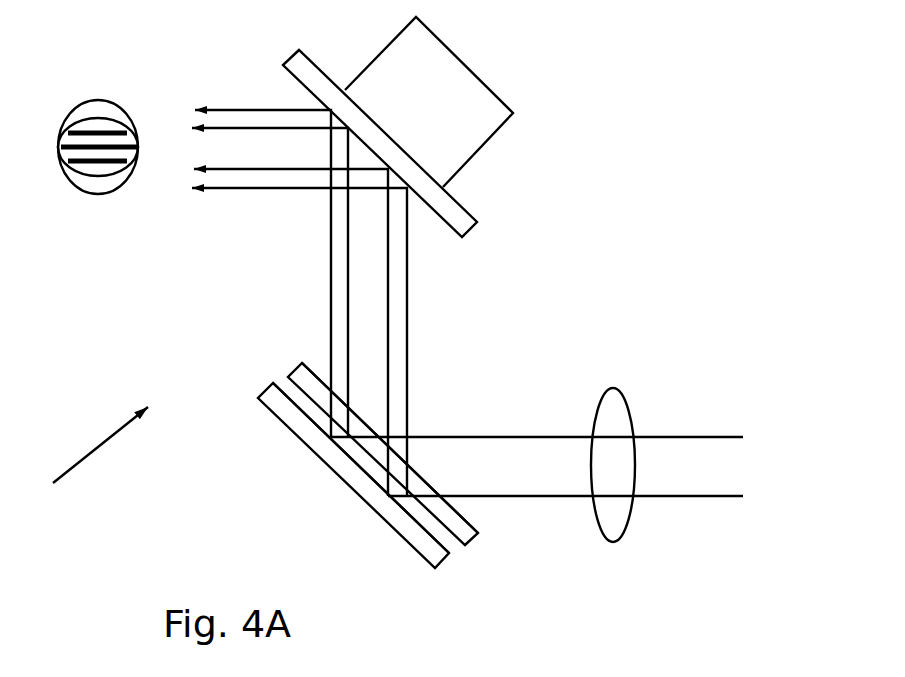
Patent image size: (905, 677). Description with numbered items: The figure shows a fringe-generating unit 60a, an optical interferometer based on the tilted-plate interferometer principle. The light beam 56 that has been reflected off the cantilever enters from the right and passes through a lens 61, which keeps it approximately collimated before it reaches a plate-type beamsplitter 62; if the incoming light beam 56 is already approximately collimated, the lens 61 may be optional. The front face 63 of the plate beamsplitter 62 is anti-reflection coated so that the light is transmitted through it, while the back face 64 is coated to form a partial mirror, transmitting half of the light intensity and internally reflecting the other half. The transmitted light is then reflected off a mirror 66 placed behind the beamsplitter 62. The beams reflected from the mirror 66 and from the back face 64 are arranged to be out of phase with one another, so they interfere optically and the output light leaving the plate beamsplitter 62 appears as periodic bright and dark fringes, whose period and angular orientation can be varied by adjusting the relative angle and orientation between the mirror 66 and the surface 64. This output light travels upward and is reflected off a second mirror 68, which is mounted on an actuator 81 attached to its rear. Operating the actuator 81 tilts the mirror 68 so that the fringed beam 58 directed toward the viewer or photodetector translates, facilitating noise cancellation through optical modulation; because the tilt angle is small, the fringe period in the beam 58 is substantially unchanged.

The light beam 56 is at (702, 460).
The beam 58 is at (241, 152).
The fringe-generating unit 60a is at (78, 470).
The lens 61 is at (613, 530).
The plate-type beamsplitter 62 is at (455, 527).
The front face 63 is at (315, 367).
The back face 64 is at (300, 392).
The mirror 66 is at (403, 522).
The second mirror 68 is at (457, 217).
The actuator 81 is at (445, 82).